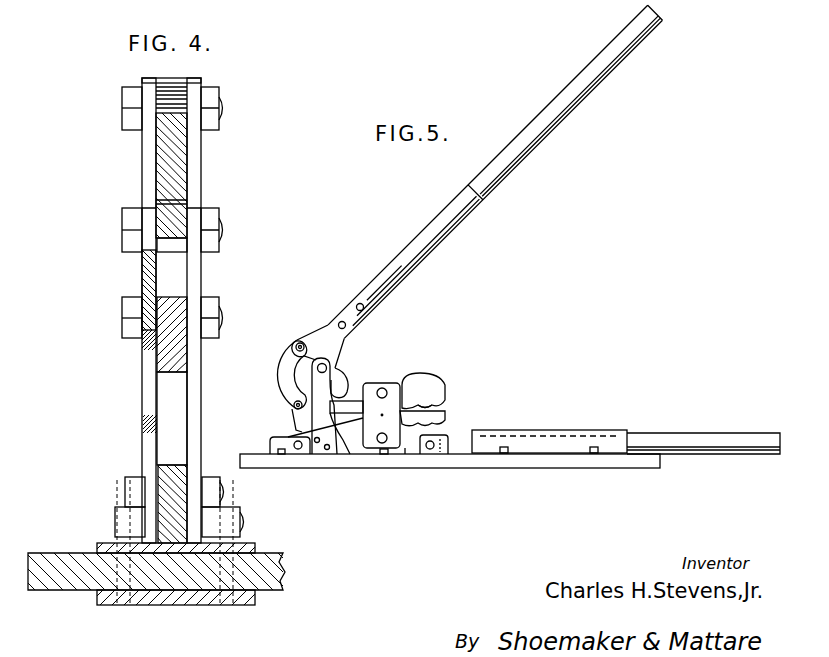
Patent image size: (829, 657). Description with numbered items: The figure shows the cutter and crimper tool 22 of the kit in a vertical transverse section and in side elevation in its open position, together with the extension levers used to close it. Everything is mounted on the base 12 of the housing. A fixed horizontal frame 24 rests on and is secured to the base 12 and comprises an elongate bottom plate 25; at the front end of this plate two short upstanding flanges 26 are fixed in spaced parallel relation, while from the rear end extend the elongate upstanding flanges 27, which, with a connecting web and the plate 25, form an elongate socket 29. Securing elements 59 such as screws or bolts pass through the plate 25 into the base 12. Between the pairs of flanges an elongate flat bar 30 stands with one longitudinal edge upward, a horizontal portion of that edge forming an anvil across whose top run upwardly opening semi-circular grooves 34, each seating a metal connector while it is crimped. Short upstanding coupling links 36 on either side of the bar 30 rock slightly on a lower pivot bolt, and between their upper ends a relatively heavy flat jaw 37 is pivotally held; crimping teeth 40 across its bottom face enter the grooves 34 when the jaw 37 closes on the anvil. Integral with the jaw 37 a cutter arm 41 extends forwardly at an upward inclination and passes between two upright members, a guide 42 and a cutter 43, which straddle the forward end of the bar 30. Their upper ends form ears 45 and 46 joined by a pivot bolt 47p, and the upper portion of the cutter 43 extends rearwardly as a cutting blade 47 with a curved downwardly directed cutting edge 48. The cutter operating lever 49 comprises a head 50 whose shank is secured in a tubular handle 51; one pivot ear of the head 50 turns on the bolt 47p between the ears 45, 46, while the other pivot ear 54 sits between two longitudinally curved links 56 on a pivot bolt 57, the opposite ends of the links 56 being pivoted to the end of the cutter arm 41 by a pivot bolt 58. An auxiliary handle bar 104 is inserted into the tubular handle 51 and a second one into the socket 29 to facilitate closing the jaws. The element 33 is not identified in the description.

In FIG. 4, the base 12 is at (67, 583).
In FIG. 5, the base 12 is at (645, 462).
In FIG. 5, the cutter and crimper tool 22 is at (276, 380).
In FIG. 5, the fixed horizontal frame 24 is at (617, 441).
In FIG. 4, the bottom plate 25 is at (103, 541).
In FIG. 5, the short upstanding flanges 26 is at (290, 457).
In FIG. 5, the elongate upstanding flanges 27 is at (462, 447).
In FIG. 5, the socket 29 is at (604, 427).
In FIG. 4, the flat bar 30 is at (167, 484).
In FIG. 5, the flat bar 30 is at (413, 443).
In FIG. 4, the shoulder 33 is at (172, 462).
In FIG. 5, the semi-circular grooves 34 is at (437, 423).
In FIG. 5, the coupling links 36 is at (392, 388).
In FIG. 5, the flat jaw 37 is at (427, 393).
In FIG. 5, the crimping teeth 40 is at (435, 410).
In FIG. 4, the cutter arm 41 is at (172, 318).
In FIG. 5, the cutter arm 41 is at (352, 397).
In FIG. 4, the guide member 42 is at (197, 382).
In FIG. 5, the guide member 42 is at (325, 406).
In FIG. 4, the cutter member 43 is at (143, 418).
In FIG. 5, the cutter member 43 is at (325, 430).
In FIG. 4, the upstanding ear 45 is at (200, 203).
In FIG. 4, the upstanding ear 46 is at (148, 215).
In FIG. 4, the cutting blade 47 is at (148, 278).
In FIG. 4, the pivot bolt 47p is at (122, 222).
In FIG. 4, the cutting edge 48 is at (150, 325).
In FIG. 5, the cutter operating lever 49 is at (313, 327).
In FIG. 4, the head 50 is at (173, 162).
In FIG. 5, the tubular handle 51 is at (435, 247).
In FIG. 4, the pivot ear 54 is at (173, 83).
In FIG. 4, the curved links 56 is at (146, 162).
In FIG. 5, the curved links 56 is at (290, 395).
In FIG. 4, the pivot bolt 57 is at (128, 97).
In FIG. 5, the pivot bolt 57 is at (296, 344).
In FIG. 5, the pivot bolt 58 is at (294, 412).
In FIG. 5, the securing elements 59 is at (508, 453).
In FIG. 5, the auxiliary handle bar 104 is at (598, 75).